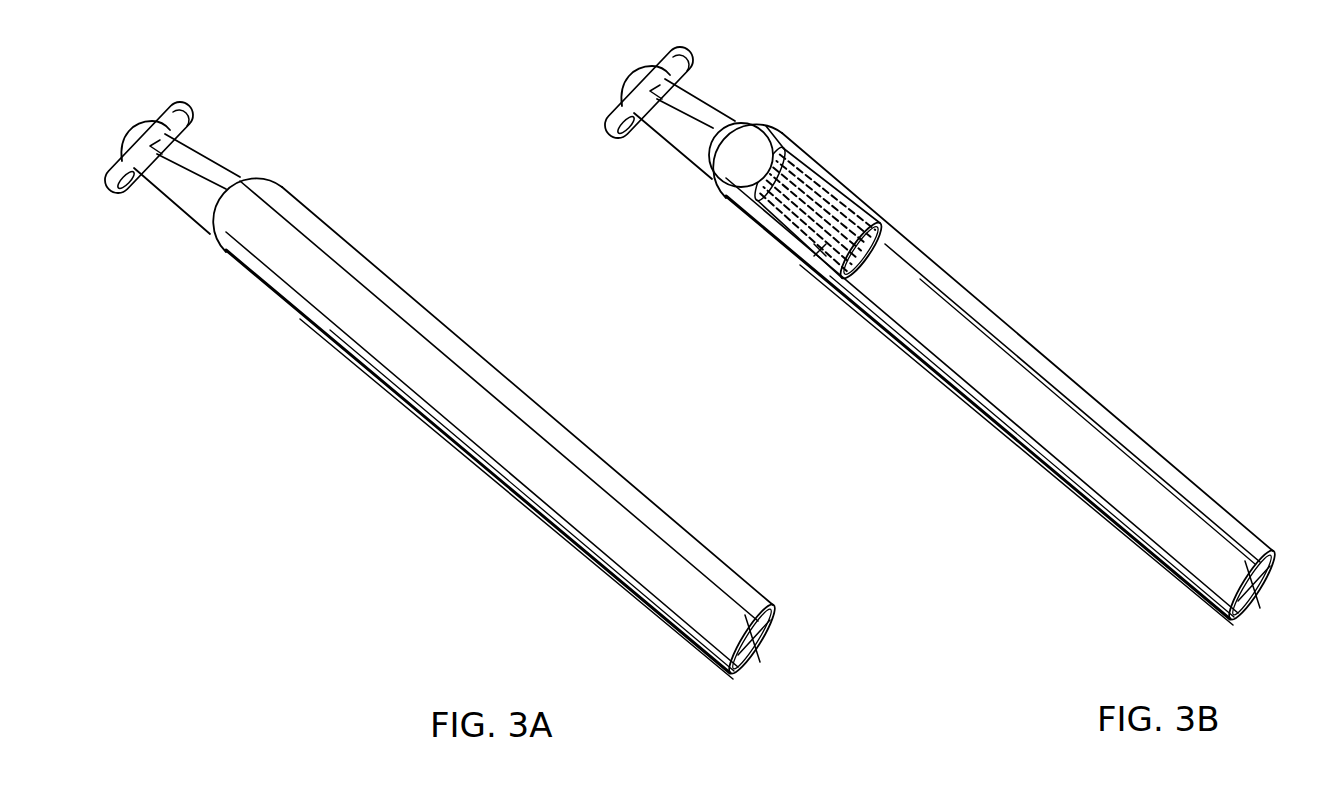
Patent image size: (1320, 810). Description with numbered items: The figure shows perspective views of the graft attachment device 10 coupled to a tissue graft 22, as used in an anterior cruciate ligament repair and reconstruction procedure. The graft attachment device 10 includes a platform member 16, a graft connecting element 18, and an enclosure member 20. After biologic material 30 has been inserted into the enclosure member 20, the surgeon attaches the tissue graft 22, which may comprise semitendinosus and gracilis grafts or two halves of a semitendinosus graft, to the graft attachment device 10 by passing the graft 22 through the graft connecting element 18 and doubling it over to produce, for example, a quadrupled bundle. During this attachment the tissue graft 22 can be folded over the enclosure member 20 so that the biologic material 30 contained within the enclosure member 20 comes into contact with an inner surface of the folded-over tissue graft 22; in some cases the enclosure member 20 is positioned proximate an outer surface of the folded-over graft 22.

In FIG. 3A, the graft attachment device 10 is at (166, 222).
In FIG. 3B, the graft attachment device 10 is at (665, 167).
In FIG. 3A, the platform member 16 is at (174, 112).
In FIG. 3B, the platform member 16 is at (674, 57).
In FIG. 3A, the graft connecting element 18 is at (204, 158).
In FIG. 3B, the graft connecting element 18 is at (704, 103).
In FIG. 3B, the enclosure member 20 is at (853, 210).
In FIG. 3A, the tissue graft 22 is at (673, 585).
In FIG. 3B, the tissue graft 22 is at (1117, 483).
In FIG. 3B, the biologic material 30 is at (818, 247).